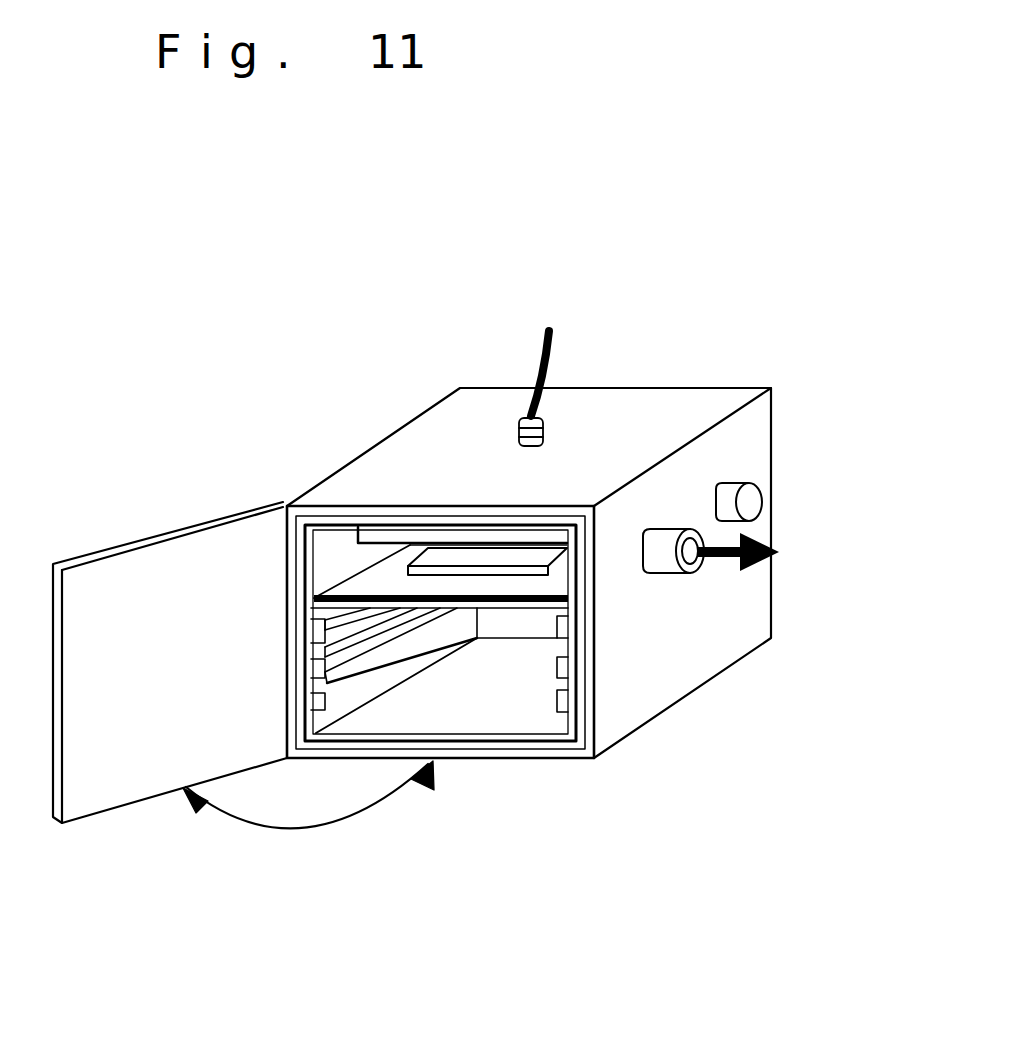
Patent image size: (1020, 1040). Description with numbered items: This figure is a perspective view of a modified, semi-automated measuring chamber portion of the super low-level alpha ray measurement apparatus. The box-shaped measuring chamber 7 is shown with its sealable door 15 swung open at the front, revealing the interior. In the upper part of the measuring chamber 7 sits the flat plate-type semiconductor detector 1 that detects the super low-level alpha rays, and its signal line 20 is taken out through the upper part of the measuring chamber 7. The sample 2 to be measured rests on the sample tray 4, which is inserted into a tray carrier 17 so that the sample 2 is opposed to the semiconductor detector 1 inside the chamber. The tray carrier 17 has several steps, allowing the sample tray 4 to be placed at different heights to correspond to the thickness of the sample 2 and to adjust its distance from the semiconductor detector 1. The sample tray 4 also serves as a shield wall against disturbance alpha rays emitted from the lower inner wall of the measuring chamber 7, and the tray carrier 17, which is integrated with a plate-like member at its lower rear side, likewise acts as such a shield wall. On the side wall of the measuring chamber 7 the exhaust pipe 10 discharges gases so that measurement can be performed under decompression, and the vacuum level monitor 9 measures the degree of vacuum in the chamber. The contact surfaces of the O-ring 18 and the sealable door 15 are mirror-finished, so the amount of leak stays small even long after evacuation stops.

The semiconductor detector 1 is at (475, 530).
The sample 2 is at (453, 553).
The sample tray 4 is at (365, 580).
The measuring chamber 7 is at (353, 487).
The vacuum level monitor 9 is at (753, 498).
The exhaust pipe 10 is at (670, 572).
The sealable door 15 is at (158, 590).
The tray carrier 17 is at (317, 612).
The O-ring 18 is at (577, 760).
The signal line 20 is at (533, 362).